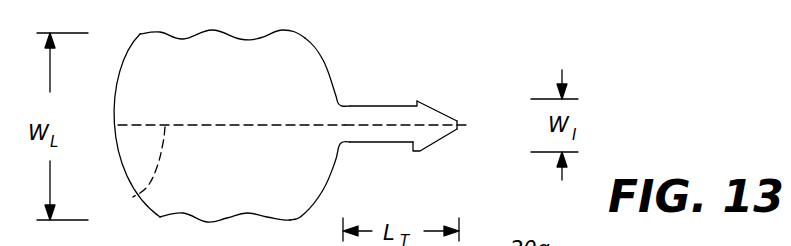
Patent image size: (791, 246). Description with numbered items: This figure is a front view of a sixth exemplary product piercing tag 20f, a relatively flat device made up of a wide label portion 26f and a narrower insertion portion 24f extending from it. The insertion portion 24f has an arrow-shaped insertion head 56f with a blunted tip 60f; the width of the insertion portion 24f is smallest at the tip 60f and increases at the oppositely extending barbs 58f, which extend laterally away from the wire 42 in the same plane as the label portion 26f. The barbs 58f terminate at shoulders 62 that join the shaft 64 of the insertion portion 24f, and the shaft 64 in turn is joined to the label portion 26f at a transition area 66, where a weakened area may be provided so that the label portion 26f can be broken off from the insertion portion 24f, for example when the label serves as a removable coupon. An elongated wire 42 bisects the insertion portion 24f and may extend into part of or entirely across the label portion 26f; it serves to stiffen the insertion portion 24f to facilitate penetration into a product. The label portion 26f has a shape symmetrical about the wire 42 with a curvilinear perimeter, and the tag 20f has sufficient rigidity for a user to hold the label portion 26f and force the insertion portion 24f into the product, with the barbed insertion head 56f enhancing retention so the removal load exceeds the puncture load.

The tag 20f is at (470, 72).
The label portion 26f is at (148, 80).
The wire 42 is at (133, 196).
The transition area 66 is at (342, 132).
The shaft 64 is at (367, 134).
The insertion portion 24f is at (380, 135).
The shoulders 62 is at (415, 101).
The barbs 58f is at (417, 100).
The tip 60f is at (458, 125).
The insertion head 56f is at (428, 135).